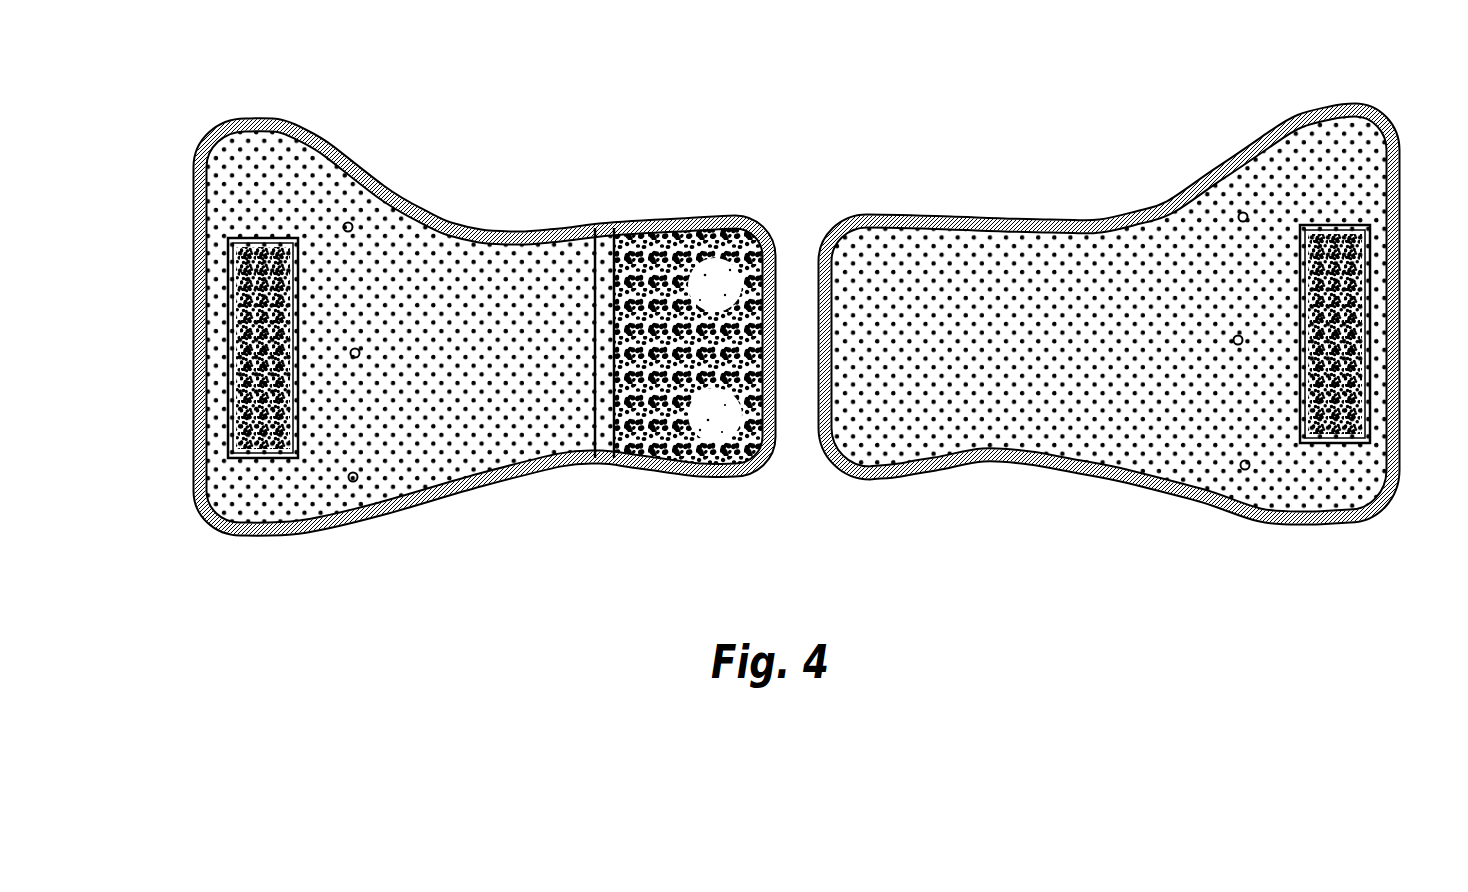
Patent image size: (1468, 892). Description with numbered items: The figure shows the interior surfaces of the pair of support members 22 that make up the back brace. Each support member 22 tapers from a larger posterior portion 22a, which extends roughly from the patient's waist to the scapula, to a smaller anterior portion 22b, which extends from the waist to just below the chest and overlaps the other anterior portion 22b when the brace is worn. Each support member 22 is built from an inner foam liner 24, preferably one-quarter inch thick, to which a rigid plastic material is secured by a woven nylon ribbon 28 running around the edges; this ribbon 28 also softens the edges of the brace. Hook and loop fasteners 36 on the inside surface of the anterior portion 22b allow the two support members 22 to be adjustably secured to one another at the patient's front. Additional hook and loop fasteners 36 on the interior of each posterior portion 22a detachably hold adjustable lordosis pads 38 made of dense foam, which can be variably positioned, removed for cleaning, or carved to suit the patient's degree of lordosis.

The support member 22 is at (796, 323).
The posterior portion 22a is at (270, 170).
The anterior portion 22b is at (710, 413).
The inner foam liner 24 is at (479, 425).
The woven nylon ribbon 28 is at (493, 228).
The hook and loop fasteners 36 is at (228, 240).
The lordosis pad 38 is at (260, 350).